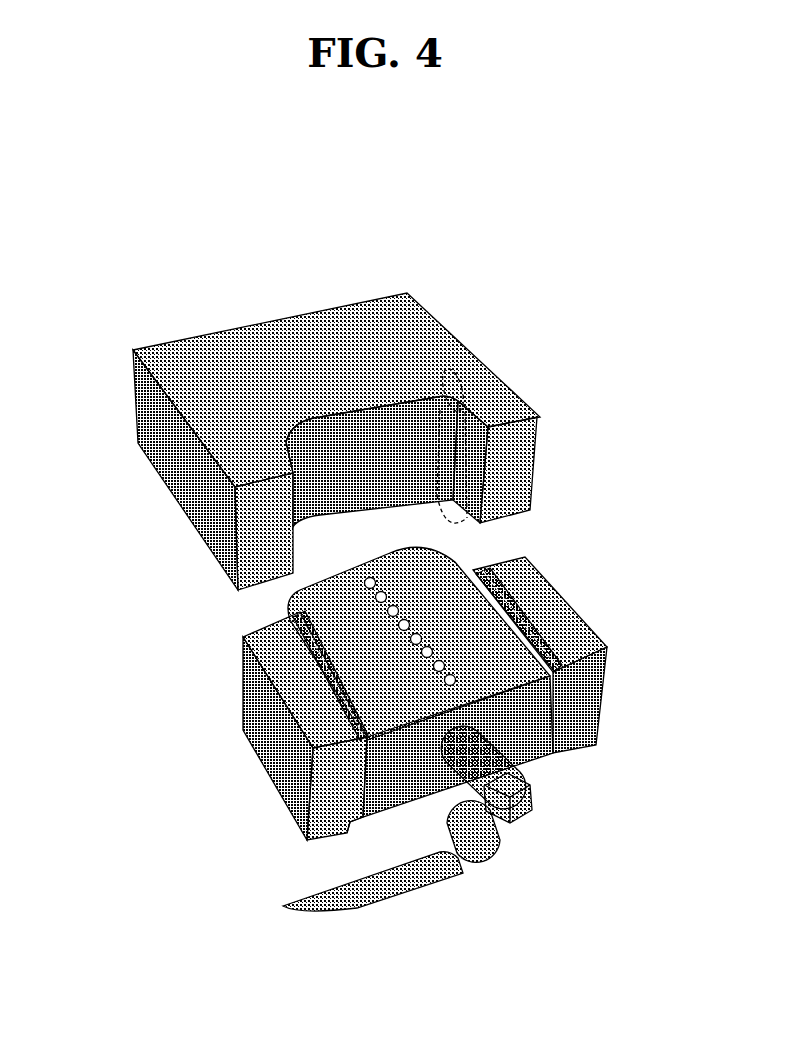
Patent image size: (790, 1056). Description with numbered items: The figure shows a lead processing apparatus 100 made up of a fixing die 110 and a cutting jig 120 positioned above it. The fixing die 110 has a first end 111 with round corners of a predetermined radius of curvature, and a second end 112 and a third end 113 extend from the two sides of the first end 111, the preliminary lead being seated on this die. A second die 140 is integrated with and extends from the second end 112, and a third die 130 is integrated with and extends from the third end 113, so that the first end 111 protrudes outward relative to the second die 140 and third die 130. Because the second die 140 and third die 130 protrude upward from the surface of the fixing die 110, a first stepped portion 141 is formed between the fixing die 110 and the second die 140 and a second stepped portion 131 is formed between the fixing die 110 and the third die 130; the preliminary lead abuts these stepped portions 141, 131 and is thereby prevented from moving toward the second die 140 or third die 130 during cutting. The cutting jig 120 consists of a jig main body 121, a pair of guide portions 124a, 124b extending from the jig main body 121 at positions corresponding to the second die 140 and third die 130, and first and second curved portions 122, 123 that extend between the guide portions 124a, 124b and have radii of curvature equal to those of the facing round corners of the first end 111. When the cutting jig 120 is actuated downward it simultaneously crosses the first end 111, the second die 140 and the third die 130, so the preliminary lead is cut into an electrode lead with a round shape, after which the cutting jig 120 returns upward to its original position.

The lead processing apparatus 100 is at (70, 308).
The fixing die 110 is at (427, 706).
The first end 111 is at (428, 563).
The second end 112 is at (553, 748).
The third end 113 is at (350, 830).
The cutting jig 120 is at (368, 439).
The jig main body 121 is at (283, 350).
The first curved portion 122 is at (463, 387).
The second curved portion 123 is at (320, 450).
The guide portion 124a is at (537, 443).
The guide portion 124b is at (260, 543).
The third die 130 is at (293, 663).
The second stepped portion 131 is at (293, 770).
The second die 140 is at (585, 628).
The first stepped portion 141 is at (560, 676).